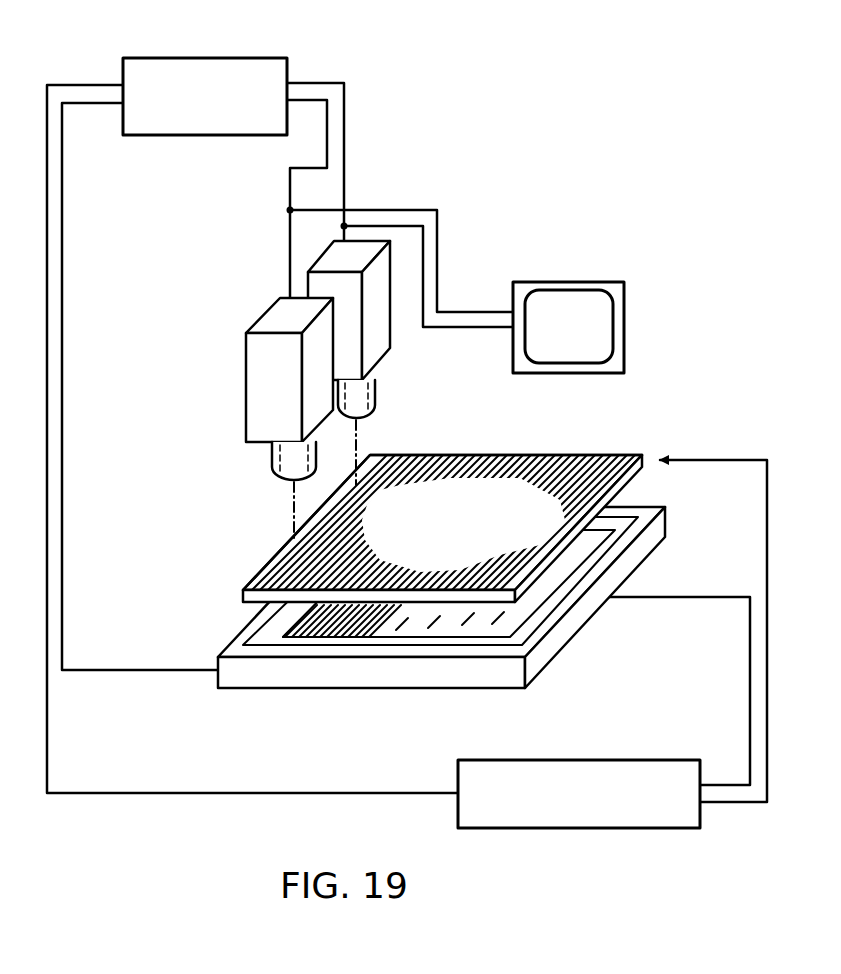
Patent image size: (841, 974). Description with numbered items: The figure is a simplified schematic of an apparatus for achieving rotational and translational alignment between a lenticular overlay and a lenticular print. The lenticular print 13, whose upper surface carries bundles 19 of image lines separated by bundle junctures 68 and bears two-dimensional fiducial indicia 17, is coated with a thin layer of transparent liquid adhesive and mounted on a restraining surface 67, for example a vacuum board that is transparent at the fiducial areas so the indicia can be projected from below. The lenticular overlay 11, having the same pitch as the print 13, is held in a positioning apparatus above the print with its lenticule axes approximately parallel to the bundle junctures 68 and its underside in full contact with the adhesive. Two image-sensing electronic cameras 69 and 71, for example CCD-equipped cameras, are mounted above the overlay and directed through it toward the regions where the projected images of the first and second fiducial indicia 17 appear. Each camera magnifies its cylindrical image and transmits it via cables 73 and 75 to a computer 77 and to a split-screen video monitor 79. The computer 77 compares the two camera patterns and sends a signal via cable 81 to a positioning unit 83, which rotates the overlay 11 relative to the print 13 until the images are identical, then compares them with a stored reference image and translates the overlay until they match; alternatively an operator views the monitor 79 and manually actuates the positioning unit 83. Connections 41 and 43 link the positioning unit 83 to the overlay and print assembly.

The lenticular overlay 11 is at (515, 450).
The lenticular print 13 is at (437, 647).
The fiducial indicia 17 is at (286, 608).
The bundles of image lines 19 is at (323, 620).
The positioning drive connection 41 is at (652, 458).
The positioning drive connection 43 is at (545, 592).
The restraining surface 67 is at (558, 636).
The bundle junctures 68 is at (304, 638).
The image-sensing electronic camera 69 is at (247, 375).
The image-sensing electronic camera 71 is at (385, 342).
The cable 73 is at (290, 238).
The cable 75 is at (347, 160).
The computer 77 is at (265, 58).
The split-screen video monitor 79 is at (553, 340).
The cable 81 is at (117, 795).
The positioning unit 83 is at (683, 828).